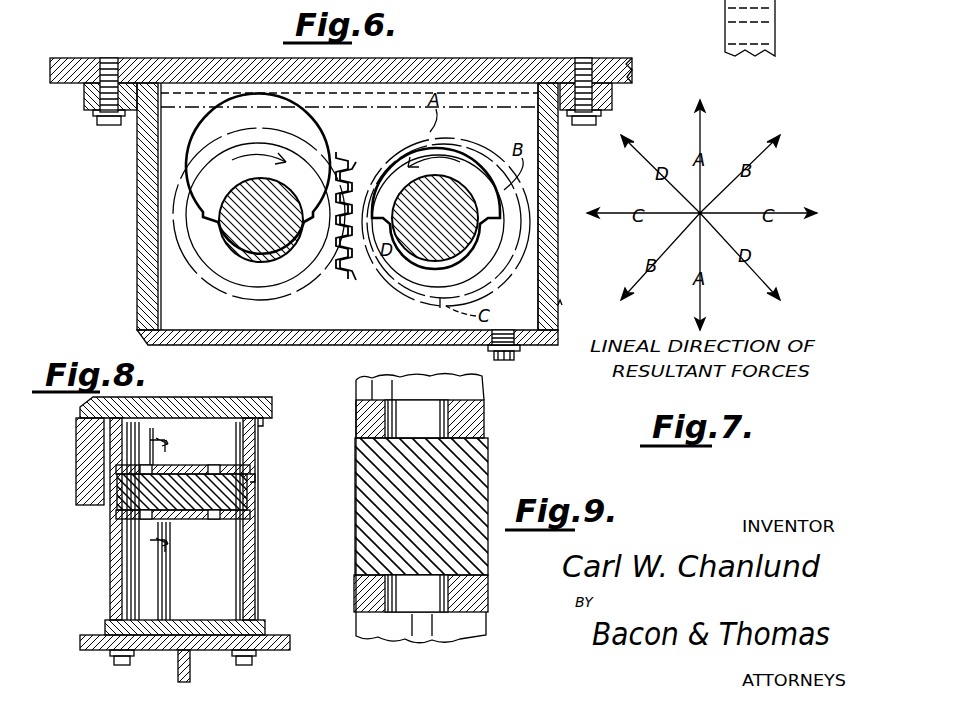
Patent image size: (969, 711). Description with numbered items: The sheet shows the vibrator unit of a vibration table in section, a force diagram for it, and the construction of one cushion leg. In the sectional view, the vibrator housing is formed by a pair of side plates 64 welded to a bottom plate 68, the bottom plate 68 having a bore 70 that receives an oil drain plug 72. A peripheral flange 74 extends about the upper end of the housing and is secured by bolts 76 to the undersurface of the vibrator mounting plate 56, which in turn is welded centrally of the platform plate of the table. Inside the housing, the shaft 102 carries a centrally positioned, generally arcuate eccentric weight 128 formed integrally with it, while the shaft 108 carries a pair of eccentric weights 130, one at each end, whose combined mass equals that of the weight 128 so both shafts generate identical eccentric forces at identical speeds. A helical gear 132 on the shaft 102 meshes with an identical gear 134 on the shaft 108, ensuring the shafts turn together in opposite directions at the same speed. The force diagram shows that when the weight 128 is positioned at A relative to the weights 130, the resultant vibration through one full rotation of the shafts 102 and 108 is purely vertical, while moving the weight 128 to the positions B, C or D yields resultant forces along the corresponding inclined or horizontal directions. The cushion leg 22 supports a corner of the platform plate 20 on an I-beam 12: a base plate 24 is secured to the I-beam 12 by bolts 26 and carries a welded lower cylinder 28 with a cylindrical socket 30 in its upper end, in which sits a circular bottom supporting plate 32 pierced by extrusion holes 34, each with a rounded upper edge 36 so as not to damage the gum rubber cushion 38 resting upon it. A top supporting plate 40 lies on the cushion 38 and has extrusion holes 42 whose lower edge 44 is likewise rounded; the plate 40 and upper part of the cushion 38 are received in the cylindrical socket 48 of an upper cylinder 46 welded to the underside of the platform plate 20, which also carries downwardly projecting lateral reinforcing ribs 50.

In FIG. 8, the I-beam 12 is at (278, 640).
In FIG. 8, the platform plate 20 is at (247, 398).
In FIG. 8, the cushion leg 22 is at (104, 539).
In FIG. 8, the base plate 24 is at (260, 628).
In FIG. 8, the bolts 26 is at (122, 665).
In FIG. 8, the lower cylinder 28 is at (115, 576).
In FIG. 8, the cylindrical socket 30 is at (252, 512).
In FIG. 8, the bottom supporting plate 32 is at (236, 520).
In FIG. 9, the bottom supporting plate 32 is at (362, 620).
In FIG. 8, the extrusion holes 34 is at (214, 519).
In FIG. 9, the extrusion holes 34 is at (440, 606).
In FIG. 9, the upper edge 36 is at (421, 593).
In FIG. 8, the cushion 38 is at (250, 488).
In FIG. 9, the cushion 38 is at (472, 484).
In FIG. 8, the top supporting plate 40 is at (172, 470).
In FIG. 9, the top supporting plate 40 is at (480, 413).
In FIG. 8, the extrusion holes 42 is at (148, 468).
In FIG. 9, the extrusion holes 42 is at (440, 412).
In FIG. 9, the lower edge 44 is at (416, 419).
In FIG. 8, the upper cylinder 46 is at (263, 424).
In FIG. 8, the cylindrical socket 48 is at (255, 478).
In FIG. 8, the lateral reinforcing ribs 50 is at (78, 440).
In FIG. 6, the vibrator mounting plate 56 is at (590, 60).
In FIG. 6, the side plates 64 is at (137, 152).
In FIG. 6, the bottom plate 68 is at (330, 343).
In FIG. 6, the bore 70 is at (506, 330).
In FIG. 6, the oil drain plug 72 is at (514, 358).
In FIG. 6, the peripheral flange 74 is at (612, 100).
In FIG. 6, the bolts 76 is at (96, 118).
In FIG. 6, the shaft 102 is at (458, 192).
In FIG. 6, the shaft 108 is at (258, 248).
In FIG. 6, the eccentric weight 128 is at (440, 168).
In FIG. 6, the eccentric weights 130 is at (232, 160).
In FIG. 6, the helical gear 132 is at (356, 168).
In FIG. 6, the gear 134 is at (338, 158).